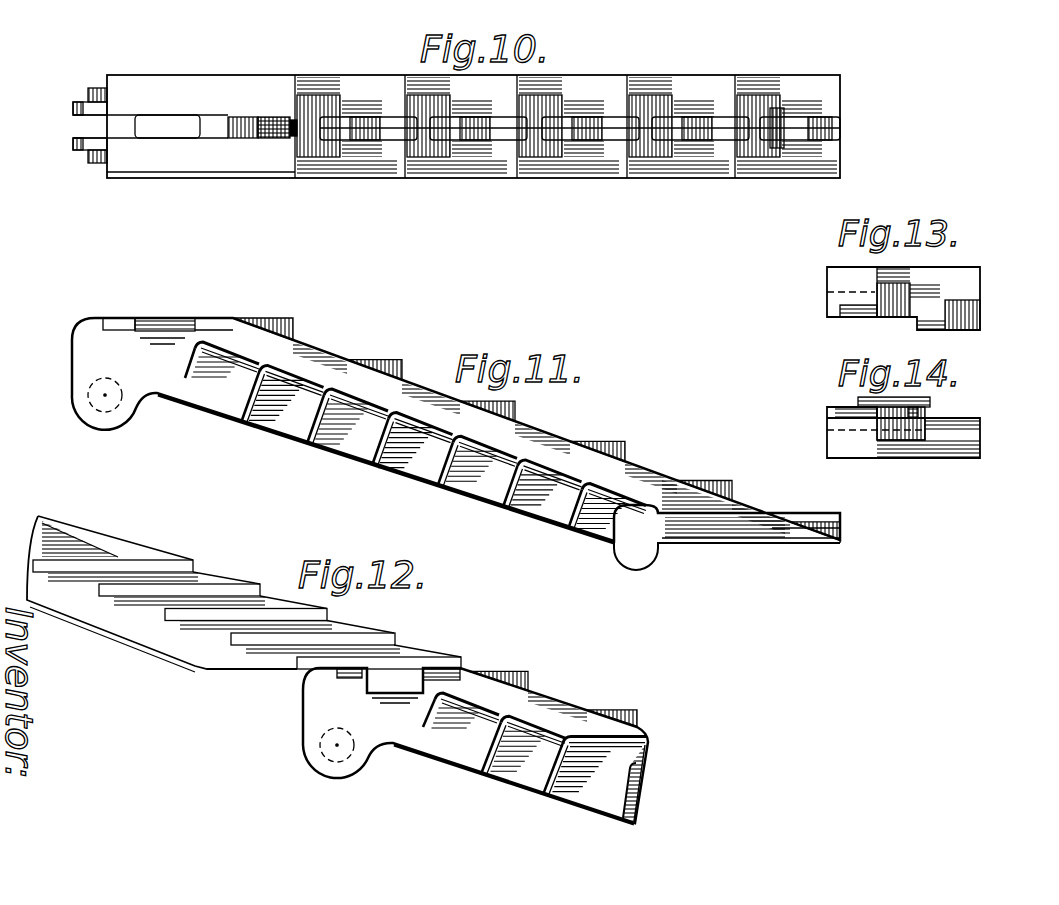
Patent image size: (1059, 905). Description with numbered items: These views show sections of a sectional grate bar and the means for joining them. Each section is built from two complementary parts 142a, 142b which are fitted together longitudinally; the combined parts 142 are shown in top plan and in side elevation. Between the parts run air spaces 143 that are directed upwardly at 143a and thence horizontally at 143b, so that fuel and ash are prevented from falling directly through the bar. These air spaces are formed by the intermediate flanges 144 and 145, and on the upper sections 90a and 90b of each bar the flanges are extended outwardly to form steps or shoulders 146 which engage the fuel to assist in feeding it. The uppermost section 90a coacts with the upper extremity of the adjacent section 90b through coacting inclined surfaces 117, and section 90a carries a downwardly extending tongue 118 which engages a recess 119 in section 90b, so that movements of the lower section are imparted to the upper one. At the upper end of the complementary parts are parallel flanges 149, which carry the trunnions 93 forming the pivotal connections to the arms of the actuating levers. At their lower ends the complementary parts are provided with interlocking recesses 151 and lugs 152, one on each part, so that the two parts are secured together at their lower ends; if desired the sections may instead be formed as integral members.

In FIG. 12, the uppermost section 90a is at (189, 553).
In FIG. 10, the adjacent section 90b is at (660, 77).
In FIG. 11, the adjacent section 90b is at (239, 312).
In FIG. 12, the adjacent section 90b is at (656, 795).
In FIG. 10, the trunnions 93 is at (98, 88).
In FIG. 11, the trunnions 93 is at (100, 405).
In FIG. 12, the trunnions 93 is at (332, 755).
In FIG. 12, the coacting inclined surfaces 117 is at (357, 668).
In FIG. 12, the tongue 118 is at (402, 677).
In FIG. 10, the recess 119 is at (178, 112).
In FIG. 11, the recess 119 is at (160, 325).
In FIG. 12, the recess 119 is at (430, 670).
In FIG. 10, the complementary parts 142 is at (261, 69).
In FIG. 11, the complementary parts 142 is at (662, 463).
In FIG. 13, the complementary part 142a is at (840, 278).
In FIG. 14, the complementary part 142b is at (830, 440).
In FIG. 10, the air spaces 143 is at (397, 117).
In FIG. 11, the air spaces 143 is at (495, 465).
In FIG. 12, the air spaces 143 is at (612, 766).
In FIG. 11, the upwardly directed portion of air space 143a is at (470, 488).
In FIG. 12, the upwardly directed portion of air space 143a is at (573, 790).
In FIG. 11, the horizontal portion of air space 143b is at (553, 447).
In FIG. 12, the horizontal portion of air space 143b is at (647, 753).
In FIG. 11, the intermediate flange 144 is at (313, 430).
In FIG. 12, the intermediate flange 144 is at (487, 750).
In FIG. 10, the intermediate flange 145 is at (373, 107).
In FIG. 11, the intermediate flange 145 is at (423, 413).
In FIG. 12, the intermediate flange 145 is at (520, 655).
In FIG. 10, the steps or shoulders 146 is at (410, 177).
In FIG. 11, the steps or shoulders 146 is at (293, 330).
In FIG. 12, the steps or shoulders 146 is at (527, 675).
In FIG. 10, the parallel flanges 149 is at (72, 142).
In FIG. 11, the parallel flanges 149 is at (77, 382).
In FIG. 12, the parallel flanges 149 is at (310, 730).
In FIG. 10, the interlocking recesses 151 is at (790, 140).
In FIG. 13, the interlocking recesses 151 is at (925, 312).
In FIG. 10, the lugs 152 is at (768, 120).
In FIG. 14, the lugs 152 is at (930, 395).